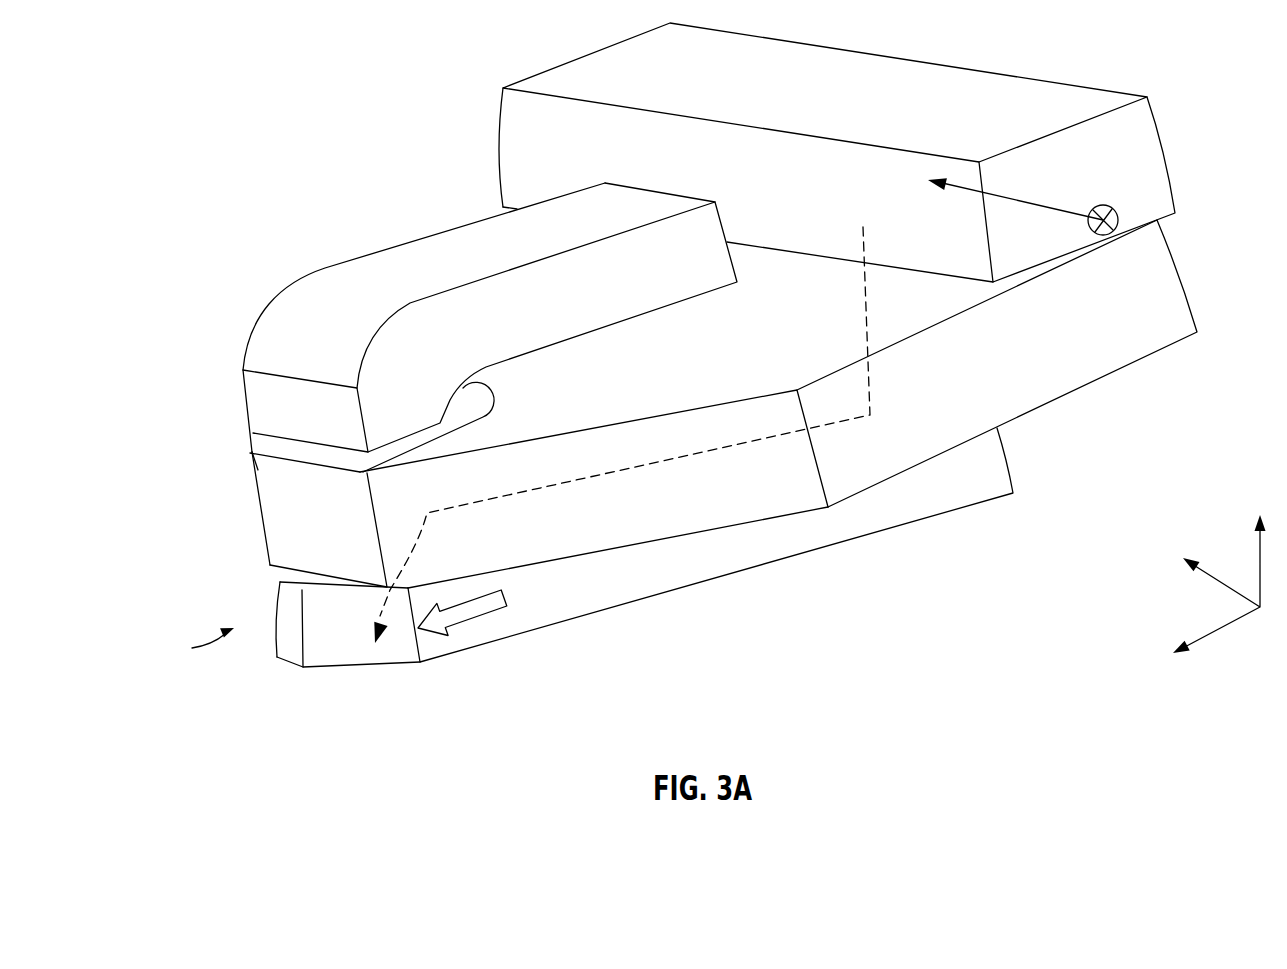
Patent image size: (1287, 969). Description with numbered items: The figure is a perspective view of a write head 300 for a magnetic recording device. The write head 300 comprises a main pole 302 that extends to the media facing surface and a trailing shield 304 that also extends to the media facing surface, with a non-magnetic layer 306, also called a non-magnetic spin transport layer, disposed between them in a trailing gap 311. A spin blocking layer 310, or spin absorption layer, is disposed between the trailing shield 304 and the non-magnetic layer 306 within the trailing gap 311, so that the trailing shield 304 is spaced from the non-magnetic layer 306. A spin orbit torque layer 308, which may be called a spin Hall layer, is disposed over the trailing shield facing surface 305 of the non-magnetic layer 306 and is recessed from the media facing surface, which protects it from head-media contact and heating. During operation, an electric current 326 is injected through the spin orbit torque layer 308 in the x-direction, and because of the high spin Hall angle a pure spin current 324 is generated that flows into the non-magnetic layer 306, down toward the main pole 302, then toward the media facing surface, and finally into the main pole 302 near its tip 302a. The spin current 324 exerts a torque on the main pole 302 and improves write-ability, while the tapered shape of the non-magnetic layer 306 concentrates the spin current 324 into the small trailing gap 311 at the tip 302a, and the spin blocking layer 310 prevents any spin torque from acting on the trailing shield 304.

The write head 300 is at (236, 76).
The main pole 302 is at (620, 592).
The tip of the main pole 302a is at (293, 645).
The trailing shield 304 is at (542, 325).
The trailing shield facing surface 305 is at (617, 388).
The non-magnetic layer 306 is at (797, 367).
The spin orbit torque layer 308 is at (850, 110).
The spin blocking layer 310 is at (287, 448).
The trailing gap 311 is at (220, 437).
The spin current 324 is at (497, 503).
The electric current 326 is at (1039, 203).